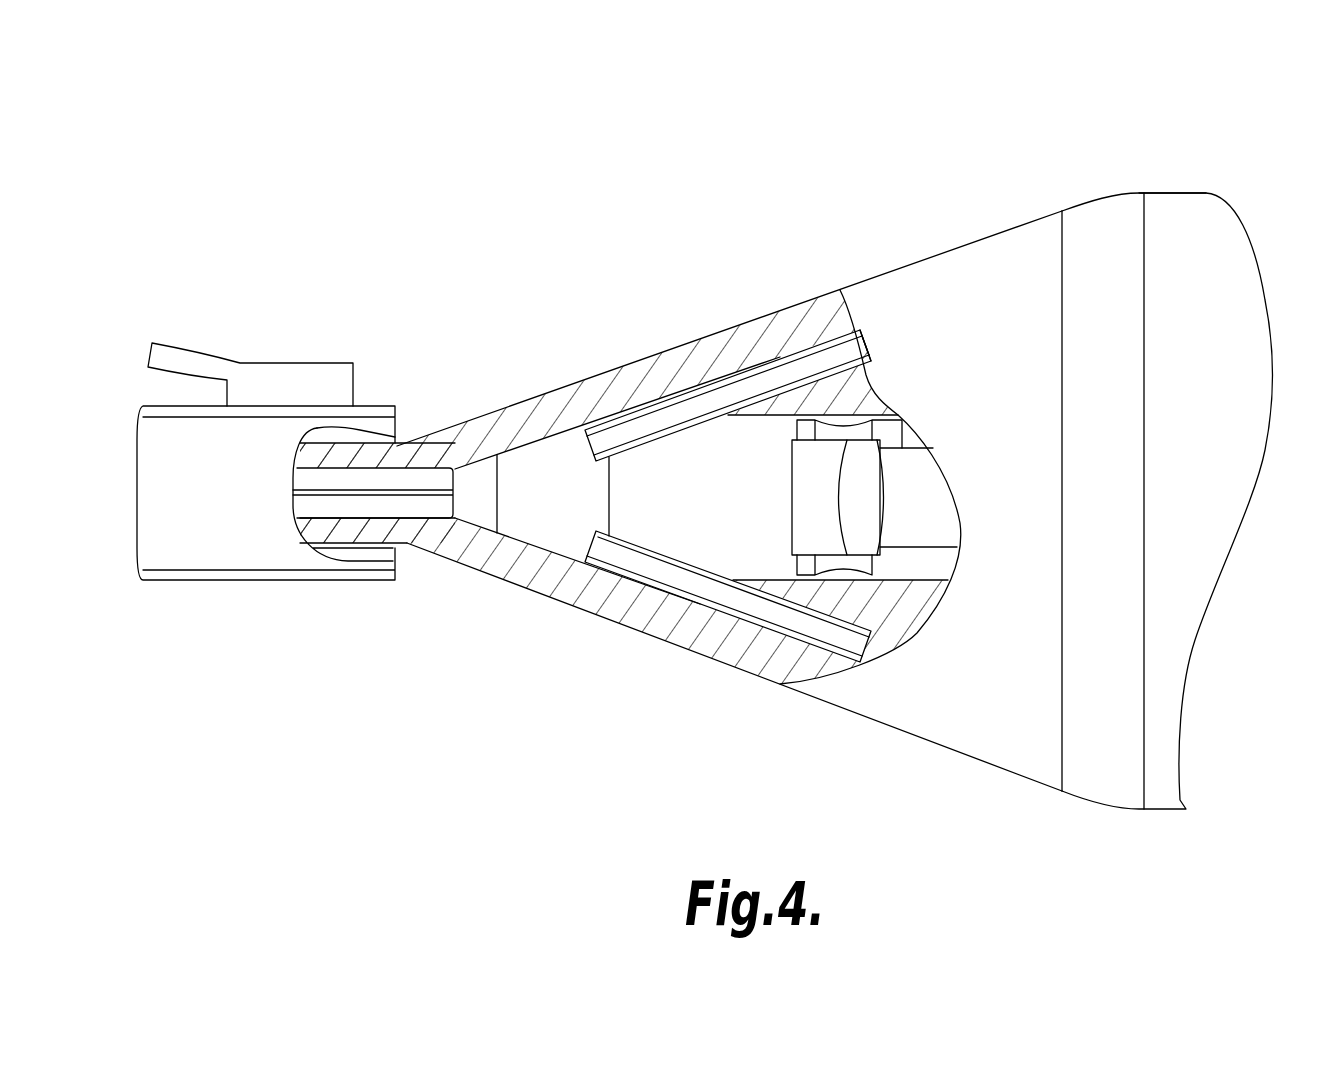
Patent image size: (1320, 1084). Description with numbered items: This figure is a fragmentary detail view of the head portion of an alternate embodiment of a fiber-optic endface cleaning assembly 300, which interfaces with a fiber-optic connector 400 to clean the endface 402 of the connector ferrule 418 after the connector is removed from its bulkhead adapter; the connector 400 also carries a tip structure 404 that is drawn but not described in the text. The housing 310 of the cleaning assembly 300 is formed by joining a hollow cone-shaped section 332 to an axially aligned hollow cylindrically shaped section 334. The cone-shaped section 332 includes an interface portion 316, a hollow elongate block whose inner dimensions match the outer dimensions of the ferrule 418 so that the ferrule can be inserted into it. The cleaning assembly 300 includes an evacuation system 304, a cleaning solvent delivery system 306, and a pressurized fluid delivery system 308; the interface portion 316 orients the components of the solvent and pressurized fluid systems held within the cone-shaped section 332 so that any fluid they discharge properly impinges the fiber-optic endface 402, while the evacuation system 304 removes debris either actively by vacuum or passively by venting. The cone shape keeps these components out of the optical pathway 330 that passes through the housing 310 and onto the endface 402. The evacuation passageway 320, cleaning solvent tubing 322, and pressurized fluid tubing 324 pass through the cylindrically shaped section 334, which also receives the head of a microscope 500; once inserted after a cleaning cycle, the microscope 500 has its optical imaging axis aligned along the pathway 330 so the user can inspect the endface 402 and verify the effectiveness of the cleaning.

The fiber-optic endface cleaning assembly 300 is at (612, 209).
The evacuation system 304 is at (745, 608).
The cleaning solvent delivery system 306 is at (697, 407).
The pressurized fluid delivery system 308 is at (823, 357).
The housing 310 is at (1057, 790).
The interface portion 316 is at (350, 543).
The evacuation passageway 320 is at (786, 675).
The cleaning solvent tubing 322 is at (630, 418).
The pressurized fluid tubing 324 is at (820, 357).
The optical pathway 330 is at (640, 508).
The cone-shaped section 332 is at (930, 255).
The cylindrically shaped section 334 is at (1183, 192).
The fiber-optic connector 400 is at (200, 576).
The endface 402 is at (465, 476).
The tip plate 404 is at (365, 435).
The ferrule 418 is at (410, 510).
The microscope 500 is at (910, 580).